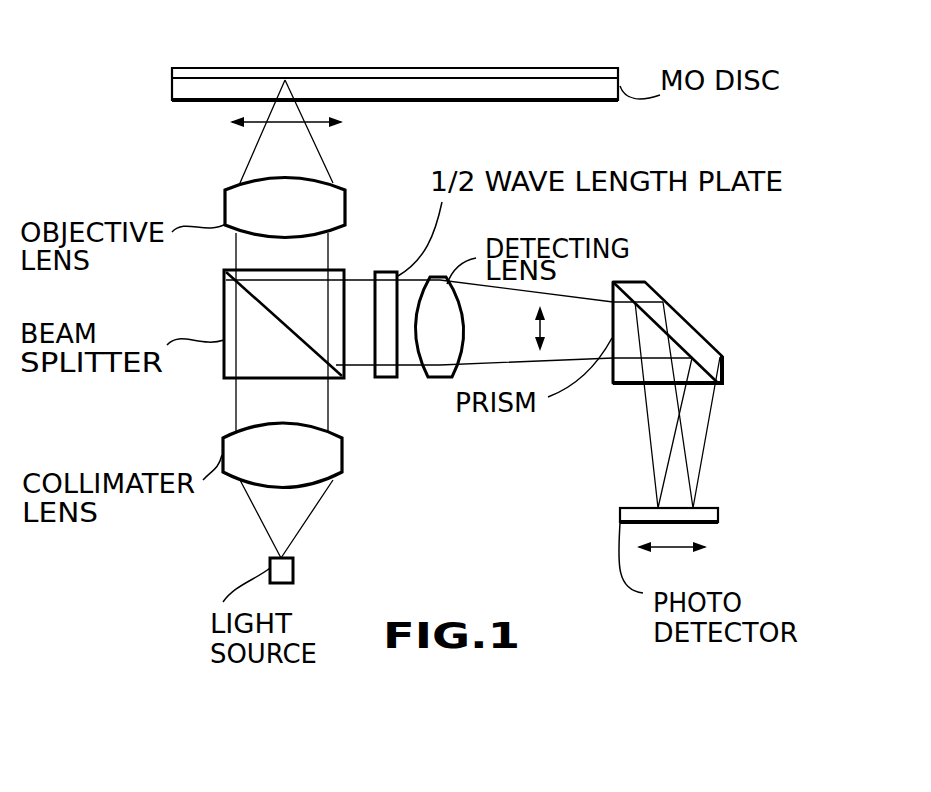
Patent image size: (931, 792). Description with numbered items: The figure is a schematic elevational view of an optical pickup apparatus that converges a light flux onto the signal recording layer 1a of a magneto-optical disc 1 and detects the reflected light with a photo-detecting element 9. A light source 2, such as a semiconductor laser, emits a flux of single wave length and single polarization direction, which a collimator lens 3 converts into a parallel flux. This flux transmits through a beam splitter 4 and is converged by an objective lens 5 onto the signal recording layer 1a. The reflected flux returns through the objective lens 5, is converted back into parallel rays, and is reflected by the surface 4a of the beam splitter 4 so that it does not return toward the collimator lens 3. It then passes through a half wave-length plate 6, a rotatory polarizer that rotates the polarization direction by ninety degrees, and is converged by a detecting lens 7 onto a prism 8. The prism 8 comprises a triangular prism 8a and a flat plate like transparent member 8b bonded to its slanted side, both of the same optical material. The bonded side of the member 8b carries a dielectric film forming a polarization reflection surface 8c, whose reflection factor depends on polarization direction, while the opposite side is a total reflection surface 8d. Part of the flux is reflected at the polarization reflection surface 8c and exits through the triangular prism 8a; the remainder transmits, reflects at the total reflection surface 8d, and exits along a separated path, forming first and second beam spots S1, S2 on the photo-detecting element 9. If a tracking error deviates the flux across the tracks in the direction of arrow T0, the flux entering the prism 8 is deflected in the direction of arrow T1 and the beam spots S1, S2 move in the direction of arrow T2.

The magneto-optical disc 1 is at (595, 60).
The signal recording layer 1a is at (483, 68).
The light source 2 is at (297, 567).
The collimator lens 3 is at (327, 465).
The beam splitter 4 is at (345, 263).
The surface of the beam splitter 4a is at (313, 353).
The objective lens 5 is at (328, 202).
The half wave-length plate 6 is at (396, 272).
The detecting lens 7 is at (445, 287).
The prism 8 is at (704, 306).
The triangular prism 8a is at (631, 366).
The flat plate like transparent member 8b is at (698, 345).
The polarization reflection surface 8c is at (707, 384).
The total reflection surface 8d is at (678, 302).
The photo-detecting element 9 is at (722, 512).
The first beam spot S1 is at (657, 507).
The second beam spot S2 is at (693, 502).
The arrow To T0 is at (267, 118).
The arrow T1 is at (557, 328).
The arrow T2 is at (672, 560).